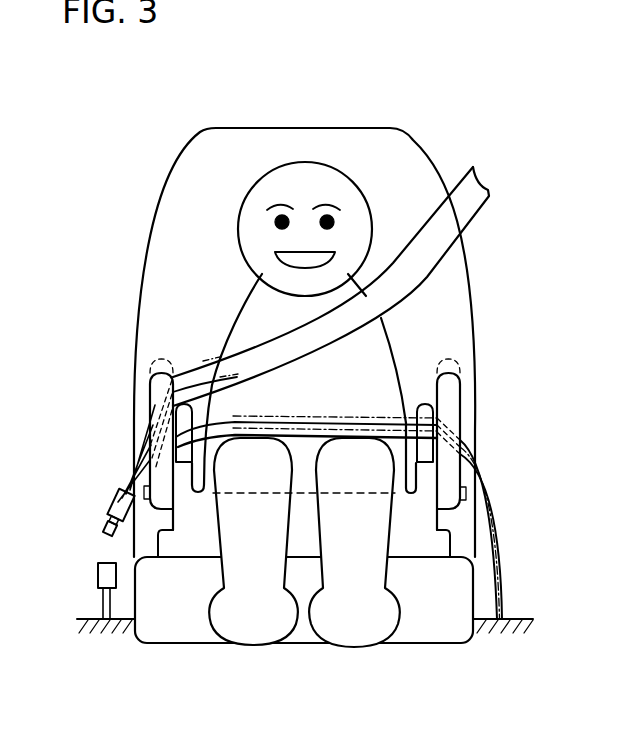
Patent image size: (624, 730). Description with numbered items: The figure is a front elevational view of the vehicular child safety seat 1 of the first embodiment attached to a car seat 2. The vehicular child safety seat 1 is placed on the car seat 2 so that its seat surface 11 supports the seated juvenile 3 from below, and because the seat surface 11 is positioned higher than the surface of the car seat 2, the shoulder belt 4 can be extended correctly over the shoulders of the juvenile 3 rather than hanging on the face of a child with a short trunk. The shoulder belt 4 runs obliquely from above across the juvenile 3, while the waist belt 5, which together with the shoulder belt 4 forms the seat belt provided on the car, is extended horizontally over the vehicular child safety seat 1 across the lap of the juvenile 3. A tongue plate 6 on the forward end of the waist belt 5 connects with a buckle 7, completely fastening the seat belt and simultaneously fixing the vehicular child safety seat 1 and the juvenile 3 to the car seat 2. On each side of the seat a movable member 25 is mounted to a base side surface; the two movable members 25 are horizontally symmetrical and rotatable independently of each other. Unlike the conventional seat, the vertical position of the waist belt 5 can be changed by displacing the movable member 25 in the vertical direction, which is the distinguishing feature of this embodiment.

The vehicular child safety seat 1 is at (195, 532).
The car seat 2 is at (157, 622).
The juvenile 3 is at (262, 315).
The shoulder belt 4 is at (424, 262).
The waist belt 5 is at (315, 432).
The tongue plate 6 is at (110, 497).
The buckle 7 is at (98, 576).
The seat surface 11 is at (356, 485).
The movable member 25 is at (449, 401).